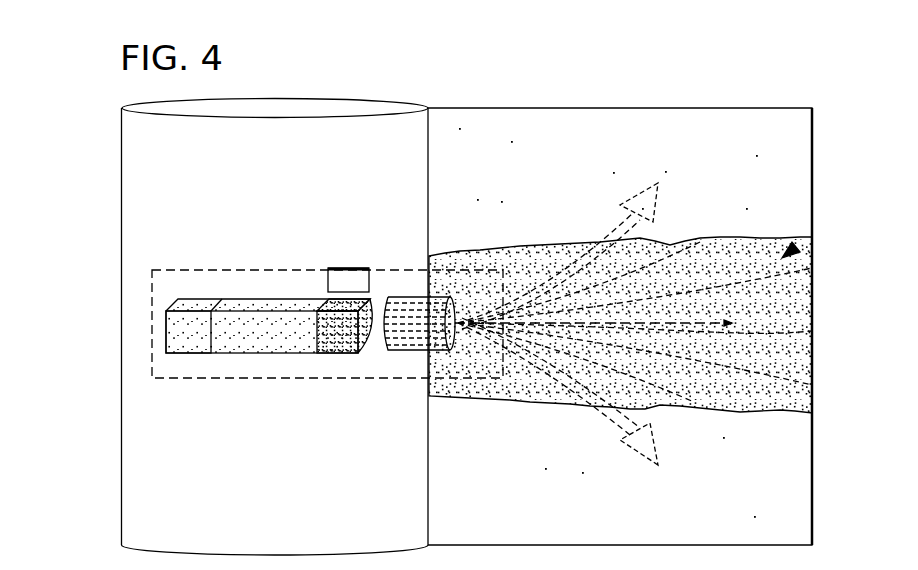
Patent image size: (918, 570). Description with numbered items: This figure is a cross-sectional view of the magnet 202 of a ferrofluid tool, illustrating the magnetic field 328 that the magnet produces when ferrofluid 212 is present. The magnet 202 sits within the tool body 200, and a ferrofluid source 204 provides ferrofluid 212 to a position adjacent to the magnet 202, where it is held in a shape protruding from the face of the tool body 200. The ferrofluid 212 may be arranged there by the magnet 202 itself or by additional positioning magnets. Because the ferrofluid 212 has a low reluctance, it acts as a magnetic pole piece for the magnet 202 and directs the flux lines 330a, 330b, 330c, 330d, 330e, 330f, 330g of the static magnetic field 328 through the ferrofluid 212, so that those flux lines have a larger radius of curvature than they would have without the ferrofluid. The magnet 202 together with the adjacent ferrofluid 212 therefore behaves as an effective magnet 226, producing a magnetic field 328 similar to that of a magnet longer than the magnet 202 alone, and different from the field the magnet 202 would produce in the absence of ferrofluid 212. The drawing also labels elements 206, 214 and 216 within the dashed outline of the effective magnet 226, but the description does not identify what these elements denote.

The tool body 200 is at (268, 117).
The ferrofluid 212 is at (812, 298).
The effective magnet 226 is at (152, 300).
The magnet 202 is at (256, 298).
The supply section 214 is at (166, 334).
The porous tip 216 is at (345, 353).
The sensor block 206 is at (350, 268).
The ferrofluid source 204 is at (414, 350).
The magnetic field 328 is at (796, 247).
The flux line 330a is at (634, 202).
The flux line 330b is at (672, 246).
The flux line 330c is at (770, 276).
The flux line 330d is at (812, 332).
The flux line 330e is at (812, 385).
The flux line 330f is at (694, 404).
The flux line 330g is at (641, 450).